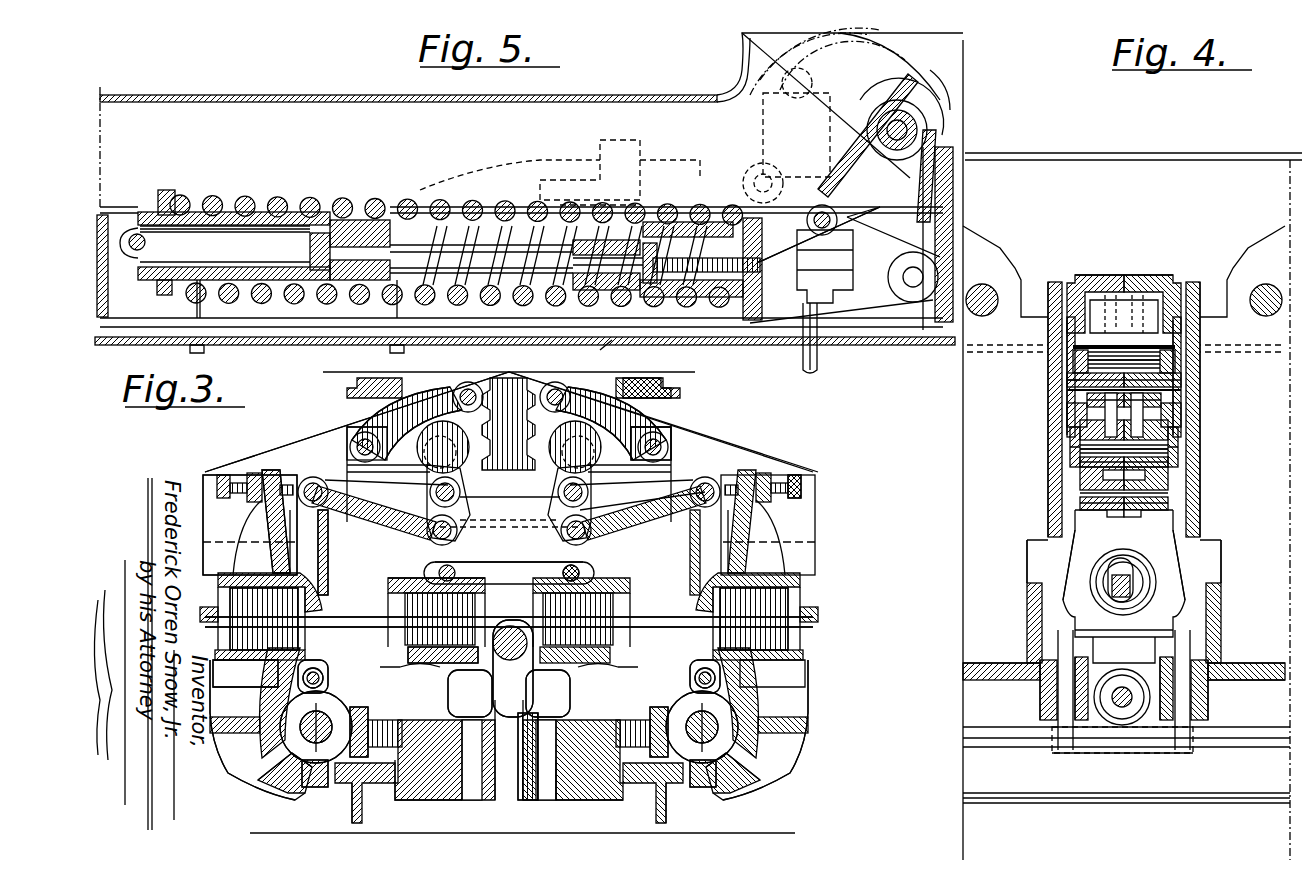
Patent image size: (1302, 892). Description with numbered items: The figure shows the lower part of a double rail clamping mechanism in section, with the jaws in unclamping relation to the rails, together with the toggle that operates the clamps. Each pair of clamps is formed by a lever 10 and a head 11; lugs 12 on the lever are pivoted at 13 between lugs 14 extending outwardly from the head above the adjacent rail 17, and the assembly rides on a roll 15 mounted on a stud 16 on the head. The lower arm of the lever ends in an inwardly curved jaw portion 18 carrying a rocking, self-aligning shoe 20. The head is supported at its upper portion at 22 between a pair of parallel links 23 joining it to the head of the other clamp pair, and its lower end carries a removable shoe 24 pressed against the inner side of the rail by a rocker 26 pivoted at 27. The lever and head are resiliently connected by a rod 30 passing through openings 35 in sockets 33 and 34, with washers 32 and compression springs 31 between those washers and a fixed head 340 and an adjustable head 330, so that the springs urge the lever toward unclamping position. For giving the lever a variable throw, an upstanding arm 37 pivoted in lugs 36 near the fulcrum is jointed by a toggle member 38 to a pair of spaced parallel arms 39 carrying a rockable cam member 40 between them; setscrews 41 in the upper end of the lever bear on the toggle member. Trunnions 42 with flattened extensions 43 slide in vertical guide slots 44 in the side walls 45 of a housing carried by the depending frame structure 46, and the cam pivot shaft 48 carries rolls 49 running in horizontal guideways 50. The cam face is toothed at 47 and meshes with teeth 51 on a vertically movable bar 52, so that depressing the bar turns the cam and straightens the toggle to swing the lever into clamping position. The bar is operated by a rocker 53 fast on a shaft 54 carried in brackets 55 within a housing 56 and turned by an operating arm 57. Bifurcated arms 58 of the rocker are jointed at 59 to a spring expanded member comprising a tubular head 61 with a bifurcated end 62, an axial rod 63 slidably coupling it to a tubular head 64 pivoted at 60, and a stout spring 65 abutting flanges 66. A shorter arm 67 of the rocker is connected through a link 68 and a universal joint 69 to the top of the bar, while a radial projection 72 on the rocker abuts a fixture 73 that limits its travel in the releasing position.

In FIG. 4, the lever 10 is at (1067, 613).
In FIG. 3, the lever 10 is at (232, 770).
In FIG. 3, the head 11 is at (440, 675).
In FIG. 4, the lugs 12 is at (1077, 723).
In FIG. 3, the lugs 12 is at (335, 708).
In FIG. 4, the pivotal connection 13 is at (1200, 693).
In FIG. 3, the pivotal connection 13 is at (282, 775).
In FIG. 4, the lugs 14 is at (1040, 710).
In FIG. 3, the lugs 14 is at (325, 700).
In FIG. 4, the roll 15 is at (1112, 712).
In FIG. 3, the roll 15 is at (352, 780).
In FIG. 4, the stud 16 is at (1123, 707).
In FIG. 3, the stud 16 is at (400, 712).
In FIG. 4, the rail 17 is at (1262, 792).
In FIG. 3, the jaw portion 18 is at (318, 790).
In FIG. 4, the shoe 20 is at (1145, 755).
In FIG. 3, the shoe 20 is at (312, 790).
In FIG. 3, the upper support point 22 is at (590, 570).
In FIG. 3, the parallel links 23 is at (509, 566).
In FIG. 3, the removable shoe 24 is at (395, 805).
In FIG. 3, the rocker 26 is at (450, 805).
In FIG. 3, the pivot 27 is at (525, 805).
In FIG. 4, the rod 30 is at (1130, 587).
In FIG. 3, the rod 30 is at (320, 625).
In FIG. 3, the compression springs 31 is at (525, 592).
In FIG. 3, the washers 32 is at (330, 590).
In FIG. 3, the socket 33 is at (228, 578).
In FIG. 3, the socket 34 is at (420, 585).
In FIG. 3, the openings 35 is at (380, 632).
In FIG. 4, the lugs 36 is at (1067, 667).
In FIG. 3, the lugs 36 is at (300, 685).
In FIG. 4, the upstanding arm 37 is at (1160, 558).
In FIG. 3, the upstanding arm 37 is at (290, 552).
In FIG. 4, the toggle member 38 is at (1083, 513).
In FIG. 3, the toggle member 38 is at (340, 485).
In FIG. 4, the parallel arms 39 is at (1083, 423).
In FIG. 3, the parallel arms 39 is at (425, 505).
In FIG. 4, the cam member 40 is at (1120, 370).
In FIG. 3, the cam member 40 is at (340, 452).
In FIG. 3, the setscrews 41 is at (217, 480).
In FIG. 4, the trunnions 42 is at (1180, 397).
In FIG. 3, the trunnions 42 is at (455, 392).
In FIG. 4, the flattened outer end extensions 43 is at (1063, 407).
In FIG. 4, the vertical guide slots 44 is at (1060, 397).
In FIG. 3, the vertical guide slots 44 is at (645, 378).
In FIG. 4, the side walls 45 is at (1075, 335).
In FIG. 3, the side walls 45 is at (660, 418).
In FIG. 4, the depending frame structure 46 is at (1057, 282).
In FIG. 3, the depending frame structure 46 is at (340, 415).
In FIG. 4, the teeth 47 is at (1105, 345).
In FIG. 3, the teeth 47 is at (345, 440).
In FIG. 4, the pivot shaft 48 is at (1160, 450).
In FIG. 3, the pivot shaft 48 is at (555, 493).
In FIG. 4, the rolls 49 is at (1077, 443).
In FIG. 3, the rolls 49 is at (560, 518).
In FIG. 4, the horizontal guideways 50 is at (1077, 462).
In FIG. 3, the horizontal guideways 50 is at (700, 475).
In FIG. 3, the teeth 51 is at (600, 345).
In FIG. 3, the vertically movable bar 52 is at (512, 382).
In FIG. 5, the rocker 53 is at (940, 100).
In FIG. 5, the shaft 54 is at (928, 125).
In FIG. 5, the brackets 55 is at (945, 160).
In FIG. 5, the housing 56 is at (185, 95).
In FIG. 5, the operating arm 57 is at (880, 60).
In FIG. 5, the arms 58 is at (845, 238).
In FIG. 5, the toggle joint 59 is at (750, 180).
In FIG. 5, the pivot 60 is at (137, 235).
In FIG. 5, the tubular head 61 is at (590, 140).
In FIG. 5, the bifurcated end portion 62 is at (695, 158).
In FIG. 5, the axial rod 63 is at (455, 245).
In FIG. 5, the tubular head 64 is at (232, 226).
In FIG. 5, the spring 65 is at (346, 198).
In FIG. 5, the flanges 66 is at (168, 190).
In FIG. 5, the shorter arm 67 is at (863, 197).
In FIG. 5, the link 68 is at (813, 370).
In FIG. 5, the universal joint 69 is at (800, 100).
In FIG. 5, the radial projection 72 is at (940, 75).
In FIG. 5, the fixture 73 is at (935, 140).
In FIG. 3, the adjustable head 330 is at (240, 660).
In FIG. 3, the fixed head 340 is at (513, 668).